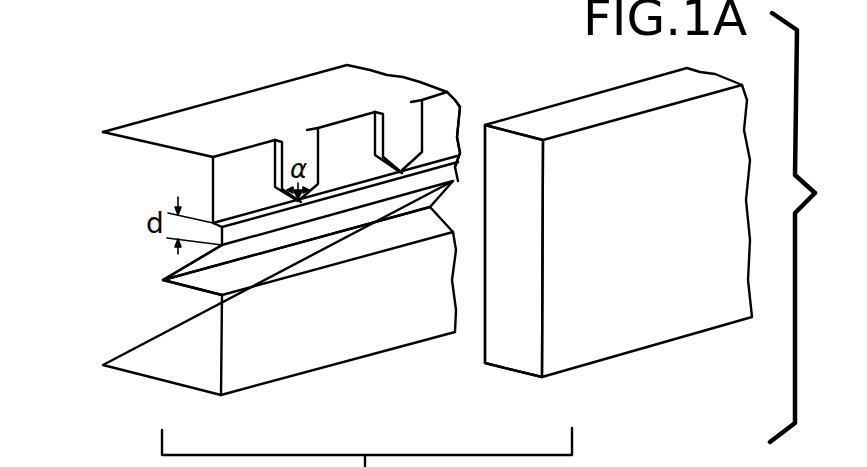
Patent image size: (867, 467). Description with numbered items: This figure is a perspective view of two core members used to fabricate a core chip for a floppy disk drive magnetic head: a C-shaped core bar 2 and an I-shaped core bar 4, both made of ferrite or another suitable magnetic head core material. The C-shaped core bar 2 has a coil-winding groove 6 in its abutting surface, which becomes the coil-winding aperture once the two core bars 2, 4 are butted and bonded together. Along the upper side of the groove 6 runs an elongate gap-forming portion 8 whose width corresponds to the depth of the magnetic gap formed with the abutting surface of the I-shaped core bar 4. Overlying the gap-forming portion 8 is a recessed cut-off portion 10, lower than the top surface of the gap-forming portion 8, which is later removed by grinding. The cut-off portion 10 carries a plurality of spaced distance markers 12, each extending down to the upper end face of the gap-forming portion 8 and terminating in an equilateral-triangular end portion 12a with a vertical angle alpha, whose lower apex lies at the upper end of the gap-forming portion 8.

The first core member 2 is at (135, 387).
The second core member 4 is at (682, 345).
The coil-winding groove 6 is at (186, 266).
The gap-forming portion 8 is at (468, 168).
The cut-off portion 10 is at (475, 115).
The distance markers 12 is at (300, 147).
The equilateral-triangular end portion 12a is at (401, 170).